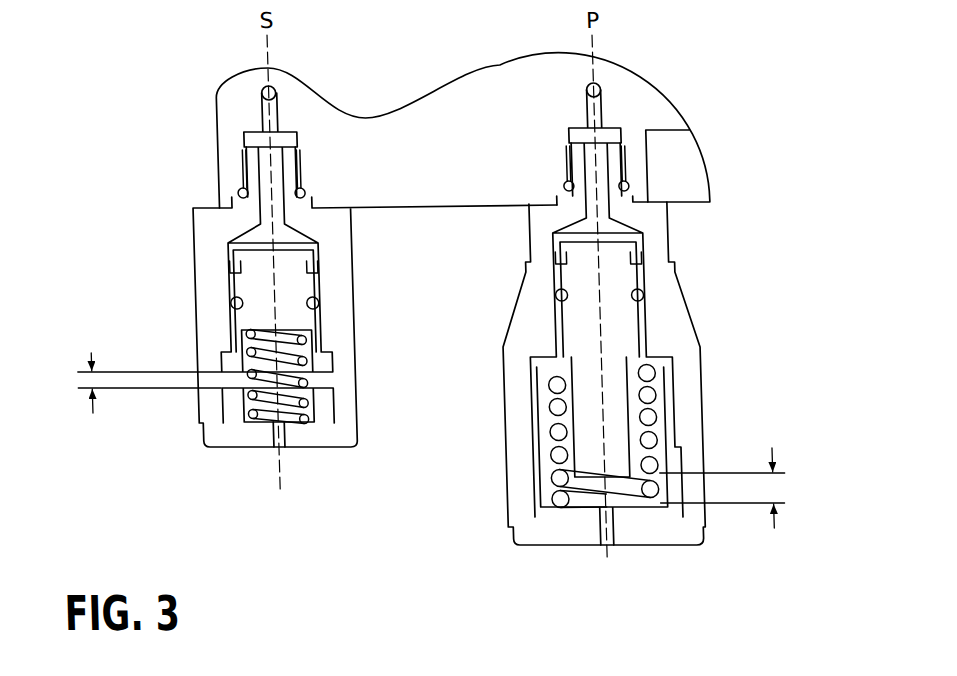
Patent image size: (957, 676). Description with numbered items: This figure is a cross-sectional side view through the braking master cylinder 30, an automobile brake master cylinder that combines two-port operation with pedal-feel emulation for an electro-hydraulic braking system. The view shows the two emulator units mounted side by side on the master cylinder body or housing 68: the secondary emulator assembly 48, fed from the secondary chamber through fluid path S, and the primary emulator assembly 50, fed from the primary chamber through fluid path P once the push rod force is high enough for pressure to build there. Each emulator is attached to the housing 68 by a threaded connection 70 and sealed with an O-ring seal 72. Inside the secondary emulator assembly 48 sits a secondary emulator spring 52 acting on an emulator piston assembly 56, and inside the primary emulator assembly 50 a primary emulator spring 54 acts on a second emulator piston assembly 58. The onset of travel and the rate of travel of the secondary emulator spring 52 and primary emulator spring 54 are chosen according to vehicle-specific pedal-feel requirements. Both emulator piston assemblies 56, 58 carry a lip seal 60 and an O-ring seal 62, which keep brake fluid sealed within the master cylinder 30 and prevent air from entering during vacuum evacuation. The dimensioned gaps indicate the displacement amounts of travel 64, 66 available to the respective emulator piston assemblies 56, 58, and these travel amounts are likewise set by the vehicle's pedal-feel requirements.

The braking master cylinder 30 is at (791, 272).
The secondary emulator assembly 48 is at (185, 281).
The primary emulator assembly 50 is at (491, 449).
The secondary emulator spring 52 is at (303, 377).
The primary emulator spring 54 is at (652, 434).
The emulator piston assembly 56 is at (253, 315).
The emulator piston assembly 58 is at (566, 323).
The lip seal 60 is at (544, 257).
The O-ring seal 62 is at (543, 292).
The displacement amount of travel 64 is at (66, 384).
The displacement amount of travel 66 is at (777, 485).
The master cylinder body or housing 68 is at (445, 113).
The threaded connection 70 is at (231, 157).
The O-ring seal 72 is at (220, 192).